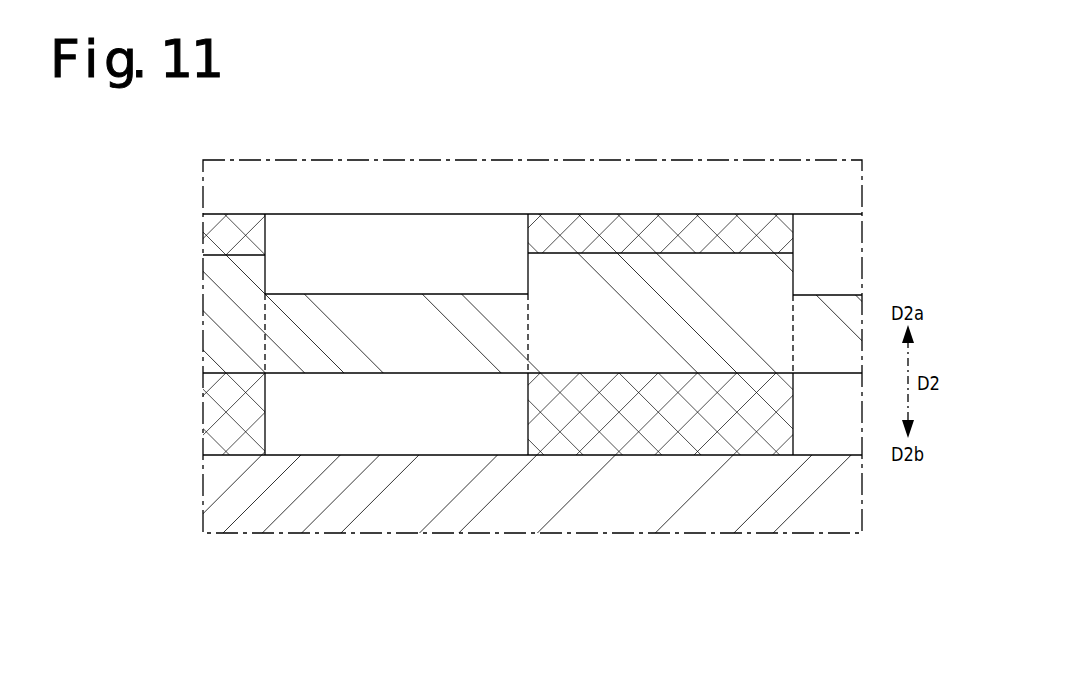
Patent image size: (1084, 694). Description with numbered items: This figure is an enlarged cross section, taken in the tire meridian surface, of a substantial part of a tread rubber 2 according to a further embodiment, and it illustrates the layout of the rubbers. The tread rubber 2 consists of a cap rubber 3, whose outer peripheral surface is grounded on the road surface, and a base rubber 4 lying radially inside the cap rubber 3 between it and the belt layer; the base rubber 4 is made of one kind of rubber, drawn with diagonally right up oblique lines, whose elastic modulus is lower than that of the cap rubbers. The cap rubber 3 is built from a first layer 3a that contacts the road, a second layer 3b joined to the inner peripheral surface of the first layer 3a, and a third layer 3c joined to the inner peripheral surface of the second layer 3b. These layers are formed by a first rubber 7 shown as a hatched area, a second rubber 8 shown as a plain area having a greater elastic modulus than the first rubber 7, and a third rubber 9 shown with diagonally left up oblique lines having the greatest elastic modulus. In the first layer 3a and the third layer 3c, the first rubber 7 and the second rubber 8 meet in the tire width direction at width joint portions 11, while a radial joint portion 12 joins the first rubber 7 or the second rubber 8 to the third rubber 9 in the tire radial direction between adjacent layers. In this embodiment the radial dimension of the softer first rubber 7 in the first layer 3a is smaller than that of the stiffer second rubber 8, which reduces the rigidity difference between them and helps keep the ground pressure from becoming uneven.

The tread rubber 2 is at (98, 317).
The cap rubber 3 is at (138, 240).
The first layer 3a is at (197, 215).
The second layer 3b is at (197, 290).
The third layer 3c is at (197, 373).
The base rubber 4 is at (198, 494).
The first rubber 7 is at (234, 226).
The second rubber 8 is at (385, 226).
The third rubber 9 is at (837, 307).
The width joint portion 11 is at (528, 236).
The radial joint portion 12 is at (329, 294).